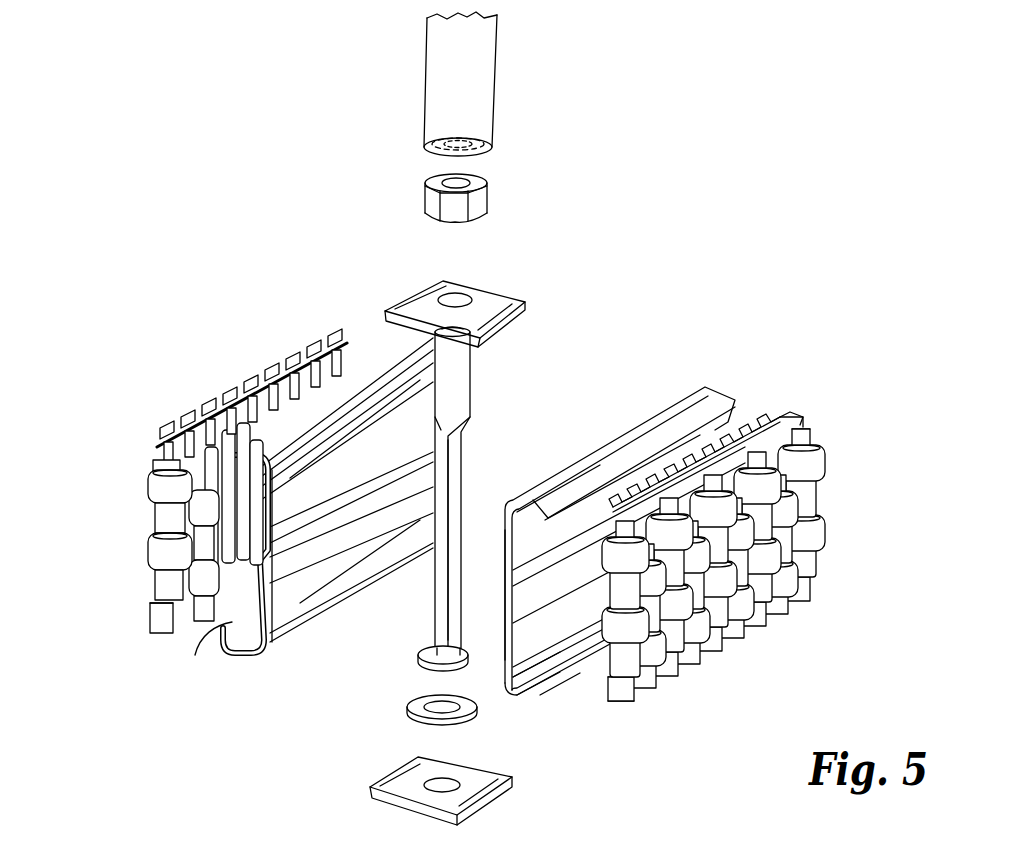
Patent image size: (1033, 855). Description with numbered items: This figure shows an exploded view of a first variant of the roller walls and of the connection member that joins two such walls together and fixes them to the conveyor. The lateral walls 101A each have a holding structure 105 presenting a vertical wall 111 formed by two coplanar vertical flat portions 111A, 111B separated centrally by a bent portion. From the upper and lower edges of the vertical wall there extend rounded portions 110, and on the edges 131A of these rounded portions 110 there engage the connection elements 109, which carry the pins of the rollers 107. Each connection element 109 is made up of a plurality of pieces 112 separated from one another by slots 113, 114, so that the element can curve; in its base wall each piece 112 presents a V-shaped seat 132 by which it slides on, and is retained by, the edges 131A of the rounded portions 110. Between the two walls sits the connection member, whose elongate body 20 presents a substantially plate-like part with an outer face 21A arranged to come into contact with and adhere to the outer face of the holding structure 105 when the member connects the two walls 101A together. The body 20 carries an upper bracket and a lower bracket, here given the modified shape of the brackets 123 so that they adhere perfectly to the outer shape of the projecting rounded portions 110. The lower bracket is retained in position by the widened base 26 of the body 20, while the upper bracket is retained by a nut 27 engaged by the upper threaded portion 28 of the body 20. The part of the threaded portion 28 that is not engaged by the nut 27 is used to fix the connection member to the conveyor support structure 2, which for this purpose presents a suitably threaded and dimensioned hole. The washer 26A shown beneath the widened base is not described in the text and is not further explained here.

The conveyor support structure 2 is at (490, 80).
The nut 27 is at (485, 200).
The brackets 123 is at (482, 293).
The upper threaded portion 28 is at (457, 355).
The outer face of plate-like part 21A is at (461, 458).
The widened base 26 is at (427, 663).
The elongate body 20 is at (423, 635).
The lock washer 26A is at (423, 723).
The holding structure 105 is at (375, 428).
The rollers 107 is at (800, 457).
The vertical flat portion 111A is at (292, 478).
The vertical flat portion 111B is at (365, 548).
The vertical wall 111 is at (495, 483).
The rounded portions 110 is at (258, 447).
The V-shaped seat 132 is at (200, 420).
The connection elements 109 is at (155, 457).
The edges of rounded portions 131A is at (230, 622).
The walls 101A is at (240, 672).
The slots 113 is at (672, 487).
The slots 114 is at (785, 417).
The pieces 112 is at (793, 600).